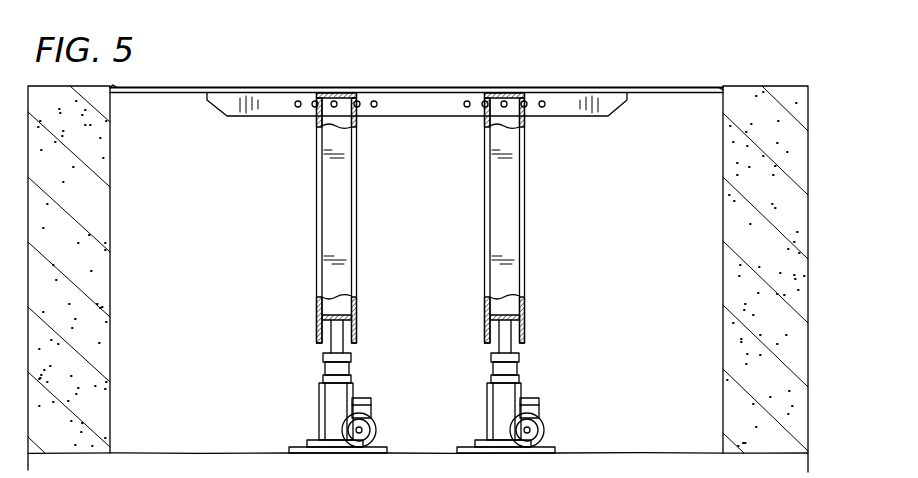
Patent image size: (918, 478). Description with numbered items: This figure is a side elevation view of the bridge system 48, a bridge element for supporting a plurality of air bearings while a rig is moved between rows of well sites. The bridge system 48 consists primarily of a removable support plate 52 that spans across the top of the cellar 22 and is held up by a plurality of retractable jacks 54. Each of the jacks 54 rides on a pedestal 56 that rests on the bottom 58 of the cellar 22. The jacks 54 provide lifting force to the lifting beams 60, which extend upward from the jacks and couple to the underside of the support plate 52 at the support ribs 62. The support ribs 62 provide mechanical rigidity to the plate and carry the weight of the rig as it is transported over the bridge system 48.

The cellar 22 is at (684, 189).
The bridge system 48 is at (655, 63).
The support plate 52 is at (177, 87).
The retractable jacks 54 is at (327, 406).
The pedestal 56 is at (384, 447).
The bottom 58 is at (170, 452).
The lifting beams 60 is at (352, 189).
The support ribs 62 is at (250, 118).